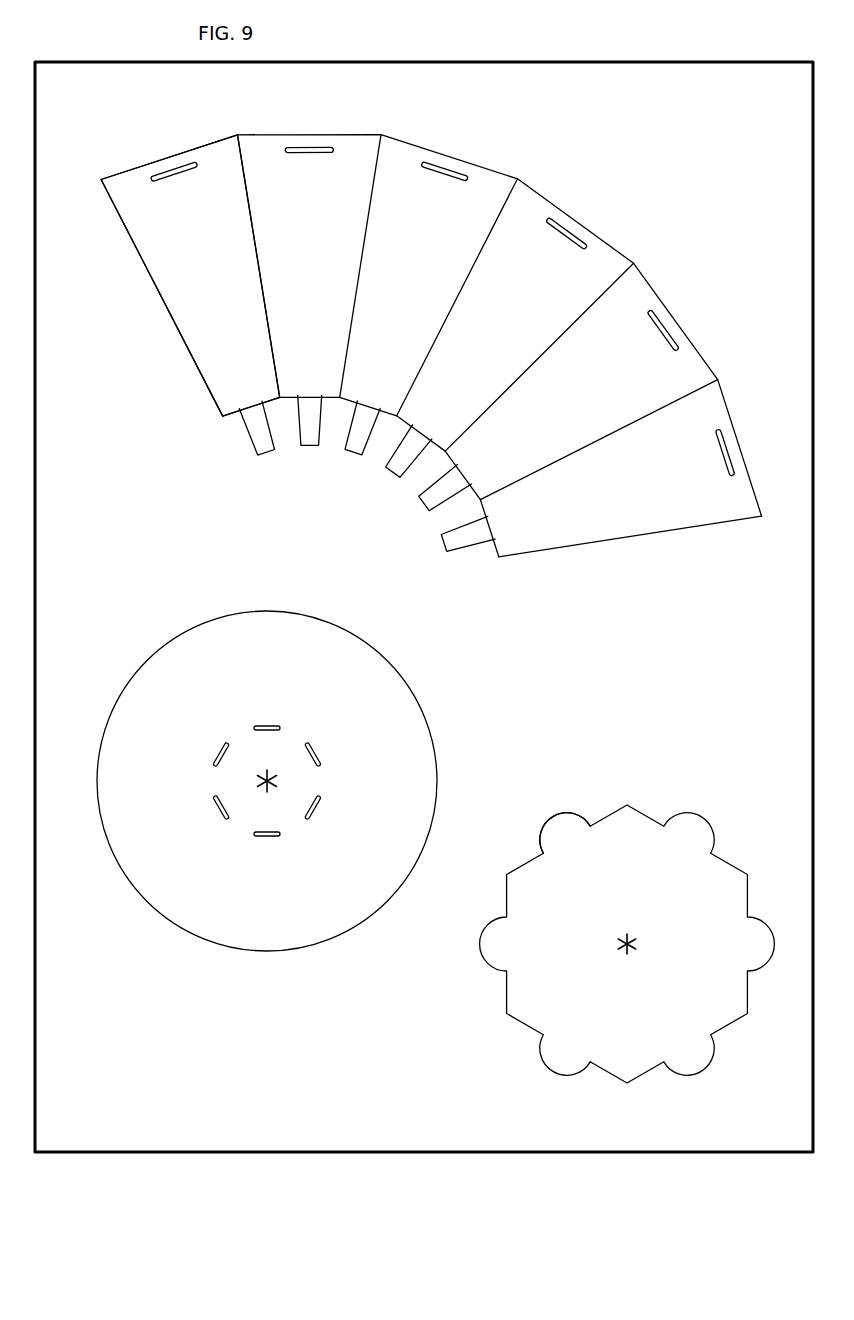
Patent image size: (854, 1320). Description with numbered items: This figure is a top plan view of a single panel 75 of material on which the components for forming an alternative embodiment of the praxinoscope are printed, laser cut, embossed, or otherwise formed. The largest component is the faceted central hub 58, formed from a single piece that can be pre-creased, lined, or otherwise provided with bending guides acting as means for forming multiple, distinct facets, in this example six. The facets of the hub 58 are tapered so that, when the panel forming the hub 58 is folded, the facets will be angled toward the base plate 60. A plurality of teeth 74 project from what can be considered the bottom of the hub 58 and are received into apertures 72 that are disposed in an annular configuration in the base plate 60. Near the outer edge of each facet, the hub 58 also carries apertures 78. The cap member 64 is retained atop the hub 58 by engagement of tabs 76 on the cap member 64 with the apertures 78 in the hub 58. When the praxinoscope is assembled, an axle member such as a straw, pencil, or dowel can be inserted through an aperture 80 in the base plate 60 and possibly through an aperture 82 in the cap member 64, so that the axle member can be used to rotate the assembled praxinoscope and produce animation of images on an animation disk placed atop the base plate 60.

The panel 75 is at (728, 155).
The faceted central hub 58 is at (178, 330).
The teeth 74 is at (256, 452).
The apertures 78 is at (557, 228).
The base plate 60 is at (353, 896).
The apertures 72 is at (265, 836).
The aperture 80 is at (257, 778).
The cap member 64 is at (607, 814).
The tabs 76 is at (550, 822).
The aperture 82 is at (630, 940).